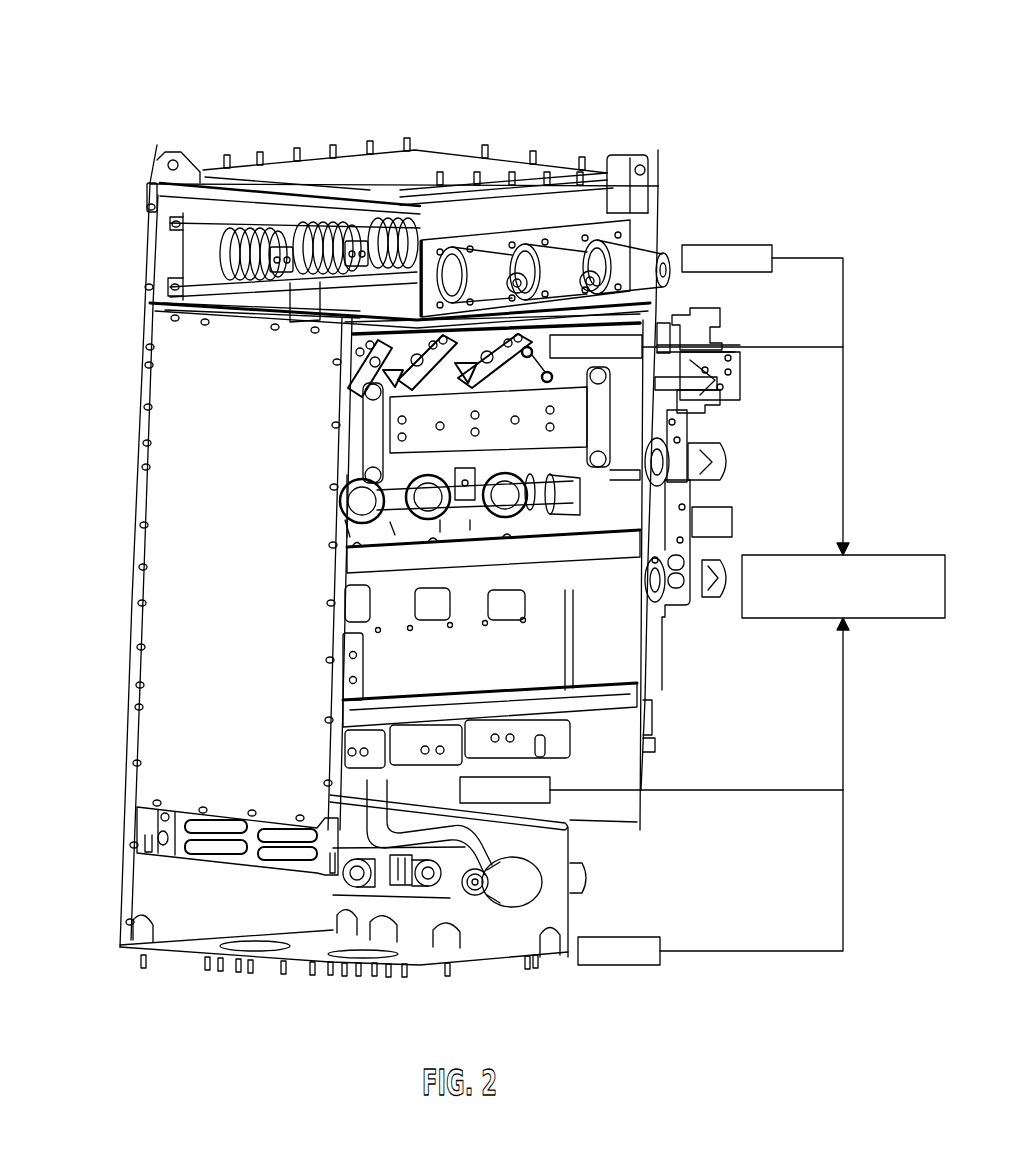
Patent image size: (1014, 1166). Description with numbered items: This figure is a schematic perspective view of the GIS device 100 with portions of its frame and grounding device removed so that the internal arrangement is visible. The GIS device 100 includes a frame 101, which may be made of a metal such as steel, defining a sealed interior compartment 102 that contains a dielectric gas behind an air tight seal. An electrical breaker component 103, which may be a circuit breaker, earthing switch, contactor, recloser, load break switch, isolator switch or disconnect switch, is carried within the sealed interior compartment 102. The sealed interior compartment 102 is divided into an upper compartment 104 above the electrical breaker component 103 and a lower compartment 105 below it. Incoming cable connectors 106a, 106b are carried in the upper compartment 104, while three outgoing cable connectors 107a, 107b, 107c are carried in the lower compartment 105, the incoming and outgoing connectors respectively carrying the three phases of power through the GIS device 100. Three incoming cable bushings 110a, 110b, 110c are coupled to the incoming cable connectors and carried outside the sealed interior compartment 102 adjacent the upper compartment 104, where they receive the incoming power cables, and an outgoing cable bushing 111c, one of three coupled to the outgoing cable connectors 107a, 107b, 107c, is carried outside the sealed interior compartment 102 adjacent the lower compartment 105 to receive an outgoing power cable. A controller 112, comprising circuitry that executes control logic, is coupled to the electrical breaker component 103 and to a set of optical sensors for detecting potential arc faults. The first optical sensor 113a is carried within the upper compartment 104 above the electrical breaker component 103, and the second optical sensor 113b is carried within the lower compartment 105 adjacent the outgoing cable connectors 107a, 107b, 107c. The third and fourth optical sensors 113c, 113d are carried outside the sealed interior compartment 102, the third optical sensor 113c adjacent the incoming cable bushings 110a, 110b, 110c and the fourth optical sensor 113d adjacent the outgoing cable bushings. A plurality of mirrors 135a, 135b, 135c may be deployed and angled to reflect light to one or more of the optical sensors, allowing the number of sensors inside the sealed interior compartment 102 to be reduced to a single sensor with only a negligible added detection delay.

The GIS device 100 is at (790, 170).
The frame 101 is at (660, 228).
The sealed interior compartment 102 is at (347, 500).
The electrical breaker component 103 is at (390, 652).
The upper compartment 104 is at (377, 353).
The lower compartment 105 is at (370, 800).
The incoming cable connector 106a is at (285, 252).
The incoming cable connector 106b is at (368, 255).
The outgoing cable connector 107a is at (358, 877).
The outgoing cable connector 107b is at (450, 897).
The outgoing cable connector 107c is at (517, 910).
The incoming cable bushing 110a is at (478, 270).
The incoming cable bushing 110b is at (550, 268).
The incoming cable bushing 110c is at (612, 262).
The outgoing cable bushing 111c is at (590, 876).
The controller 112 is at (865, 558).
The first optical sensor 113a is at (696, 346).
The second optical sensor 113b is at (651, 790).
The third optical sensor 113c is at (765, 400).
The fourth optical sensor 113d is at (713, 792).
The mirror 135a is at (120, 925).
The mirror 135b is at (340, 950).
The mirror 135c is at (552, 940).